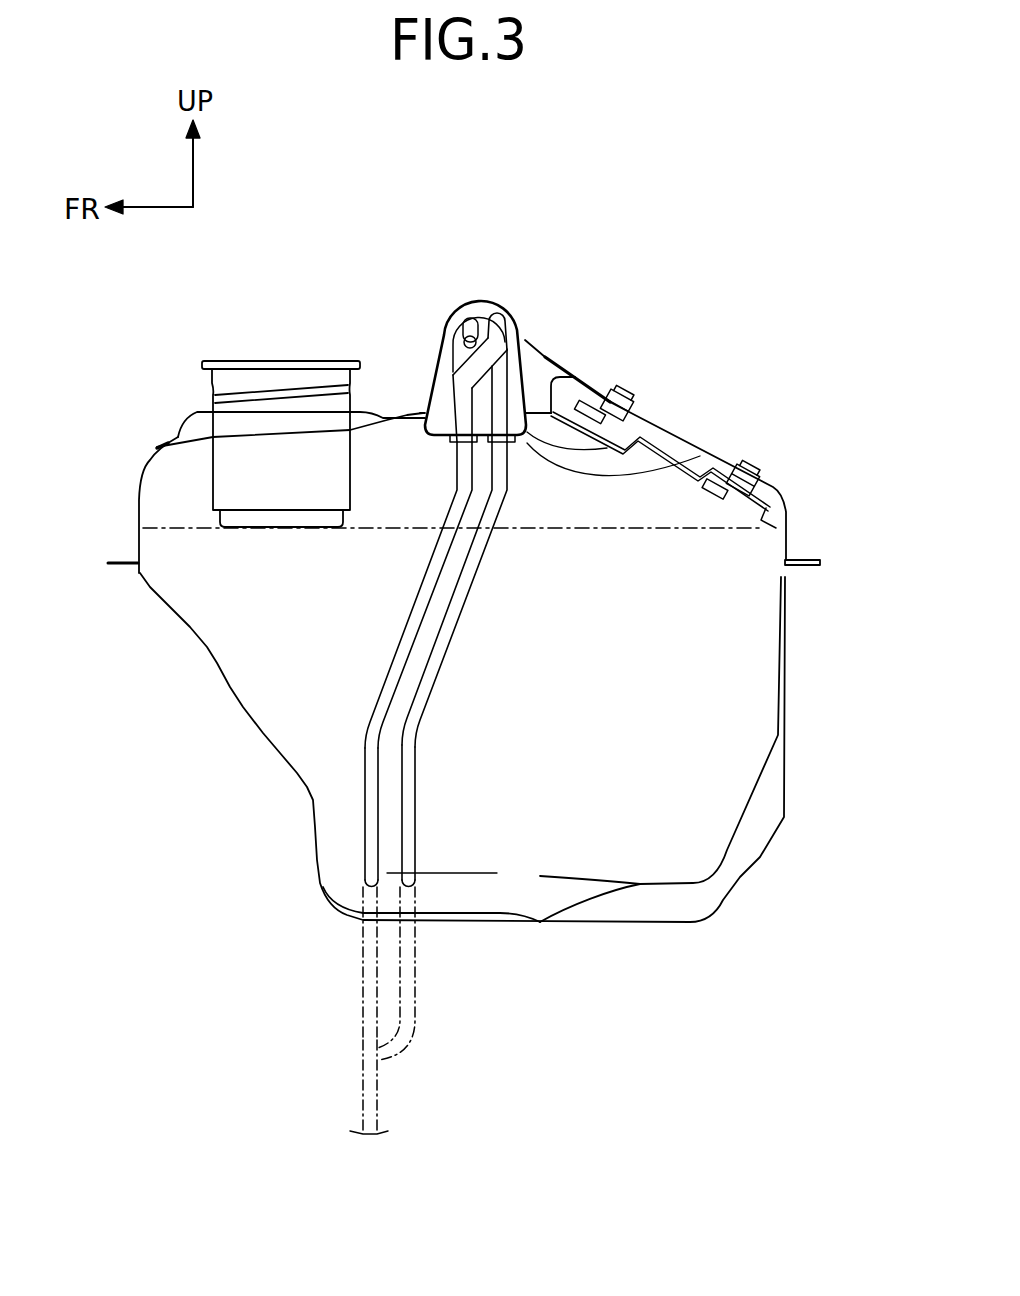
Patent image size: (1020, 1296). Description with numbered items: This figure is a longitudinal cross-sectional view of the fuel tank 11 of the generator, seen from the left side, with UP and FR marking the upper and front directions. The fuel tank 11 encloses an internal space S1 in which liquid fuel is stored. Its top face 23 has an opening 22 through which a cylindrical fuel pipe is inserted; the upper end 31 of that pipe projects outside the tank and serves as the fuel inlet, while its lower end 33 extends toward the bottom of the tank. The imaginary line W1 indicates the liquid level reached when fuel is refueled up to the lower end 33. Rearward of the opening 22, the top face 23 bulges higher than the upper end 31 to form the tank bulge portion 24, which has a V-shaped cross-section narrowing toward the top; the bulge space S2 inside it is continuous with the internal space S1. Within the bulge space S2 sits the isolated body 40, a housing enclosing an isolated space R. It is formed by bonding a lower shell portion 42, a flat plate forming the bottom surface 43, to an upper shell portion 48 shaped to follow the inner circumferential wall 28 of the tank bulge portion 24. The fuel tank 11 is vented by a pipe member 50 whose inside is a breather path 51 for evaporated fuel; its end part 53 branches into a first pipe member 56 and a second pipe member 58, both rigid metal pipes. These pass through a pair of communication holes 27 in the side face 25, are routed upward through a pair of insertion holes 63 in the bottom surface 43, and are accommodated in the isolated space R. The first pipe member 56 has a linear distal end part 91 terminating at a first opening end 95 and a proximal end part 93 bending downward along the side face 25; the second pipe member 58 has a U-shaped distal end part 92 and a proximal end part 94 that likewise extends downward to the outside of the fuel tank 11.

The fuel tank 11 is at (676, 335).
The opening 22 is at (230, 397).
The top face 23 is at (201, 411).
The tank bulge portion 24 is at (555, 359).
The side face 25 is at (345, 827).
The communication holes 27 is at (408, 877).
The inner circumferential wall 28 is at (432, 362).
The upper end 31 is at (202, 362).
The lower end 33 is at (222, 525).
The isolated body 40 is at (466, 301).
The lower shell portion 42 is at (620, 438).
The bottom surface 43 is at (652, 470).
The upper shell portion 48 is at (526, 317).
The pipe member 50 is at (358, 1100).
The breather path 51 is at (358, 1032).
The end part 53 is at (358, 975).
The first pipe member 56 is at (400, 770).
The second pipe member 58 is at (360, 750).
The insertion holes 63 is at (460, 452).
The distal end part 91 is at (470, 320).
The distal end part 92 is at (508, 318).
The proximal end part 93 is at (415, 617).
The proximal end part 94 is at (458, 605).
The first opening end 95 is at (447, 336).
The isolated space R is at (434, 390).
The internal space S1 is at (746, 668).
The bulge space S2 is at (531, 350).
The imaginary line W1 is at (787, 503).